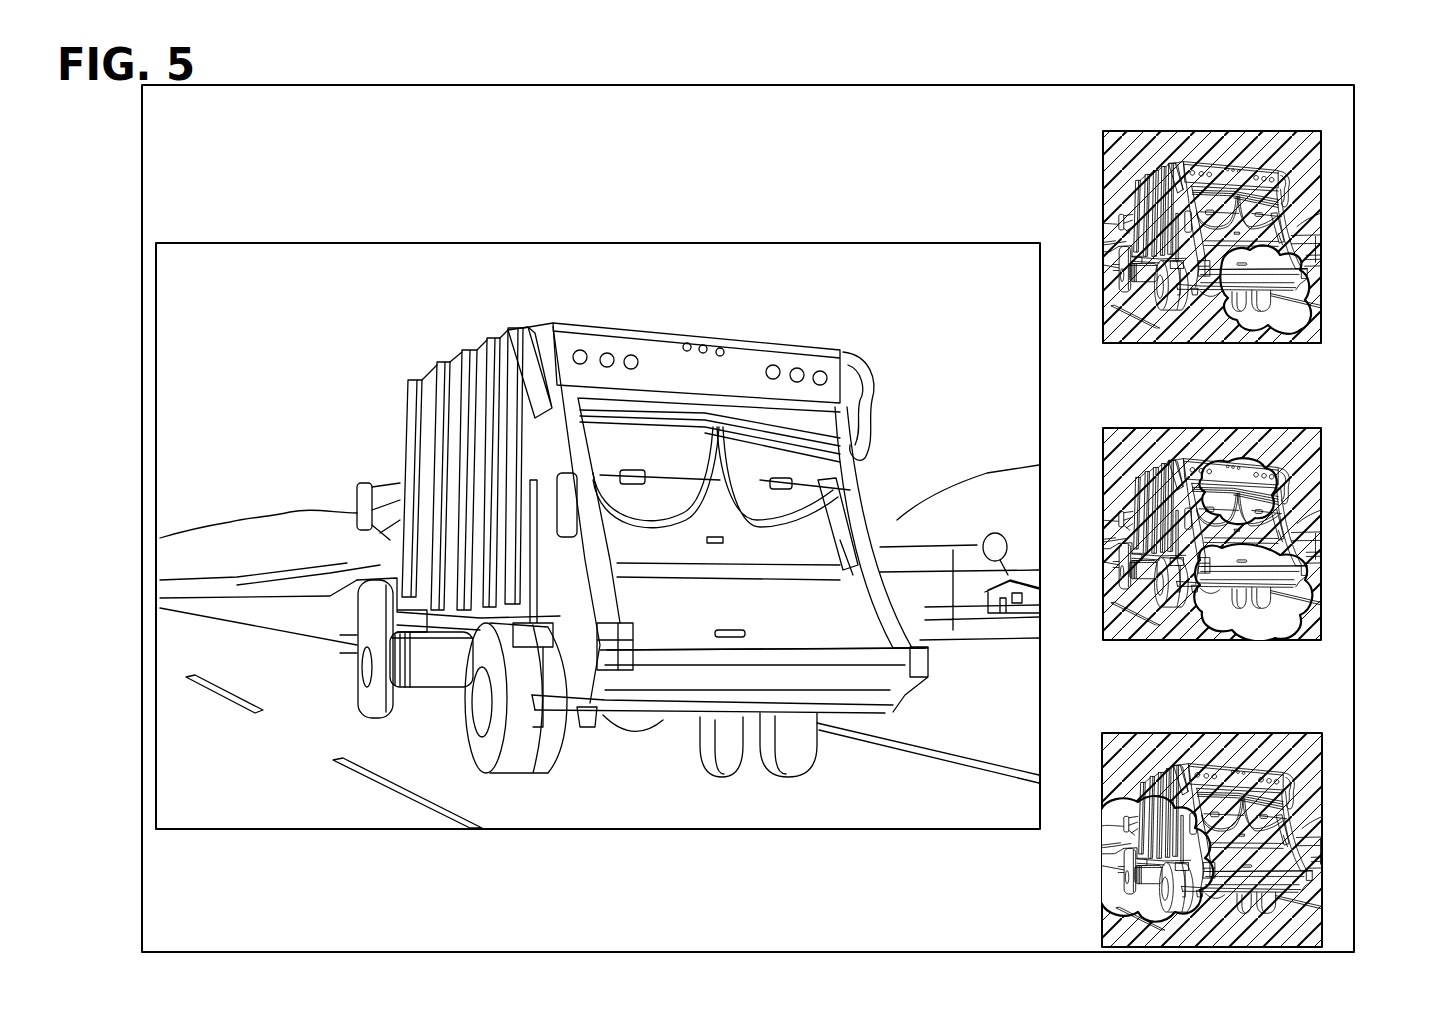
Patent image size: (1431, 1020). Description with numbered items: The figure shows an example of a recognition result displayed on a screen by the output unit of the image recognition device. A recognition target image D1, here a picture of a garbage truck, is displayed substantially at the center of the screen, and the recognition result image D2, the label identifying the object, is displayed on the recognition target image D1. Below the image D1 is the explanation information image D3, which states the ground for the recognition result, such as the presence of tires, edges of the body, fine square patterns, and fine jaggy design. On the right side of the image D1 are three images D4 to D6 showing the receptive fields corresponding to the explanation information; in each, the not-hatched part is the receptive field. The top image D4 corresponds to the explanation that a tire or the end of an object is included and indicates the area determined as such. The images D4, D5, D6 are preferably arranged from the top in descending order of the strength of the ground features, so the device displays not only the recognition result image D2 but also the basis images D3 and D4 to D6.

The recognition target image D1 is at (923, 242).
The recognition result image D2 is at (638, 198).
The explanation information image D3 is at (170, 879).
The receptive field image D4 is at (1322, 218).
The receptive field image D5 is at (1322, 550).
The receptive field image D6 is at (1322, 880).